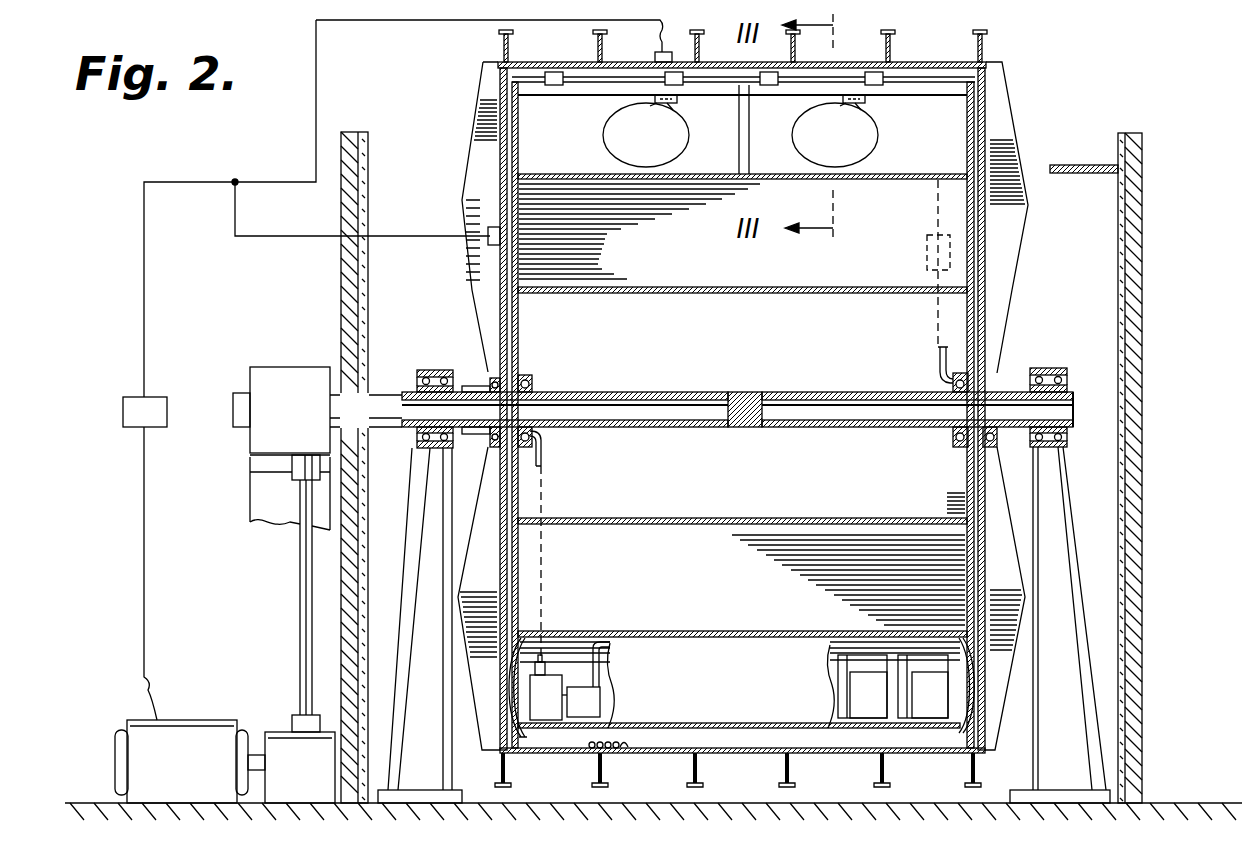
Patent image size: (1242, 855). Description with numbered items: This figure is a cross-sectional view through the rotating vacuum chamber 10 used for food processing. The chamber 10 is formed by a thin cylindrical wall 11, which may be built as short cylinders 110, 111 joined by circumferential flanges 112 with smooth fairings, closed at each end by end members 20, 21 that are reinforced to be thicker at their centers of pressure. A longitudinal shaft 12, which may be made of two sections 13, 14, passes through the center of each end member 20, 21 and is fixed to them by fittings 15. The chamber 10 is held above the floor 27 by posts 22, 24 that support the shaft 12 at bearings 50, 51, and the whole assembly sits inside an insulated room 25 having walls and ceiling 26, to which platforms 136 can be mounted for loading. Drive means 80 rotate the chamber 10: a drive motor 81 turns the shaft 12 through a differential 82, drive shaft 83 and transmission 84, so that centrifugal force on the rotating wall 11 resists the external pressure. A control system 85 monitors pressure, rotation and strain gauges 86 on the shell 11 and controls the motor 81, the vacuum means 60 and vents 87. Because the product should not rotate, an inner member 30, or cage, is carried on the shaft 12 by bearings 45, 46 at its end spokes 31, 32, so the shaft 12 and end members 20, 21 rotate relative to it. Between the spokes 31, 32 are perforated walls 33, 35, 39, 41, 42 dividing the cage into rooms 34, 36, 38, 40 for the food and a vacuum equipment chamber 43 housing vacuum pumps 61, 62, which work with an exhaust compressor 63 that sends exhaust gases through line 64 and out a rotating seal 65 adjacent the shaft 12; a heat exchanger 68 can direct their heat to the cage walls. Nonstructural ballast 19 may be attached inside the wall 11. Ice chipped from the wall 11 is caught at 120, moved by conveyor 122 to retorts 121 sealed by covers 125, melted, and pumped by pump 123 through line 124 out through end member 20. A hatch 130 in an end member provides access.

The chamber 10 is at (1010, 36).
The cylindrical wall 11 is at (548, 38).
The longitudinal shaft 12 is at (798, 385).
The shaft section 13 is at (857, 390).
The shaft section 14 is at (646, 390).
The fittings 15 is at (488, 386).
The nonstructural ballast 19 is at (633, 740).
The end member 20 is at (1005, 108).
The end member 21 is at (478, 103).
The post 22 is at (440, 553).
The post 24 is at (1068, 513).
The insulated room 25 is at (1105, 255).
The walls and ceiling 26 is at (1142, 598).
The floor 27 is at (1185, 800).
The inner member 30 is at (955, 212).
The end spoke member 31 is at (967, 135).
The end spoke member 32 is at (513, 152).
The wall 33 is at (618, 180).
The room 34 is at (735, 258).
The wall 35 is at (776, 294).
The room 36 is at (705, 348).
The room 38 is at (735, 468).
The wall 39 is at (870, 518).
The room 40 is at (822, 580).
The wall 41 is at (805, 630).
The wall 42 is at (605, 728).
The vacuum equipment chamber 43 is at (740, 685).
The bearing 45 is at (957, 368).
The bearing 46 is at (521, 375).
The bearing 50 is at (1055, 368).
The bearing 51 is at (422, 368).
The vacuum means 60 is at (888, 712).
The vacuum pump 61 is at (930, 700).
The vacuum pump 62 is at (862, 702).
The exhaust compressor 63 is at (548, 705).
The line 64 is at (548, 500).
The rotating seal 65 is at (548, 446).
The heat exchanger 68 is at (597, 665).
The drive means 80 is at (238, 462).
The drive motor 81 is at (147, 745).
The differential 82 is at (297, 740).
The drive shaft 83 is at (300, 594).
The transmission 84 is at (275, 387).
The control system 85 is at (128, 418).
The strain gauges 86 is at (655, 56).
The vents 87 is at (485, 230).
The short cylinder 110 is at (862, 60).
The short cylinder 111 is at (958, 42).
The circumferential flange 112 is at (498, 41).
The ice catching means 120 is at (772, 135).
The retort 121 is at (605, 134).
The conveyor 122 is at (960, 86).
The pump 123 is at (926, 244).
The line 124 is at (937, 304).
The cover 125 is at (662, 104).
The hatch 130 is at (520, 690).
The platform 136 is at (1096, 166).